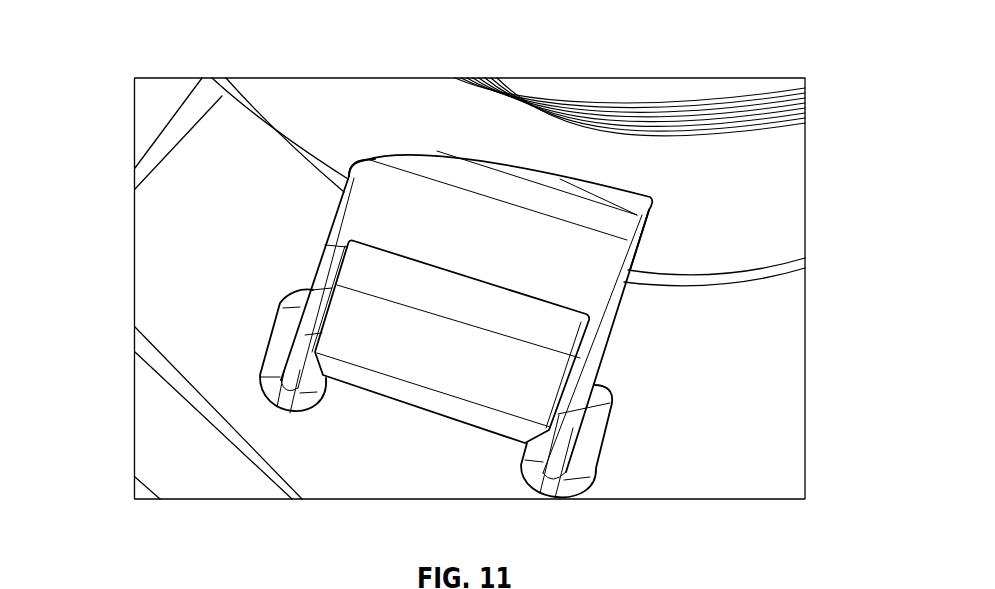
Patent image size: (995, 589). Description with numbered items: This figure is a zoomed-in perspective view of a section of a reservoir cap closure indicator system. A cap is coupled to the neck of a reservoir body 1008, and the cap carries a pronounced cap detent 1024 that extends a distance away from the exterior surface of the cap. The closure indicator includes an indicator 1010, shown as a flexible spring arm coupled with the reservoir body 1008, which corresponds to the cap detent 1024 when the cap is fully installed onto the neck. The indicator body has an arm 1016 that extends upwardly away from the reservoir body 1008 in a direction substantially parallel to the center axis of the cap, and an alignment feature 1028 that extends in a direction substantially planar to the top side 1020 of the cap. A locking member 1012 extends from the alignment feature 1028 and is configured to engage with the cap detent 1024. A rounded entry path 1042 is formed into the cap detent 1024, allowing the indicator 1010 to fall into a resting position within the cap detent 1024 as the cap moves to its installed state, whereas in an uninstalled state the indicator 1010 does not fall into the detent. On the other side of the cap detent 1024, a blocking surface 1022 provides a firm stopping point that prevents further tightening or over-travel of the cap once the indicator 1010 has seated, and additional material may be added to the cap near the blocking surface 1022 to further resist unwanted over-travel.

The reservoir body 1008 is at (777, 440).
The indicator 1010 is at (469, 279).
The locking member 1012 is at (547, 181).
The arm 1016 is at (442, 405).
The top side 1020 is at (372, 117).
The blocking surface 1022 is at (643, 243).
The cap detent 1024 is at (512, 160).
The alignment feature 1028 is at (610, 196).
The rounded entry path 1042 is at (370, 161).